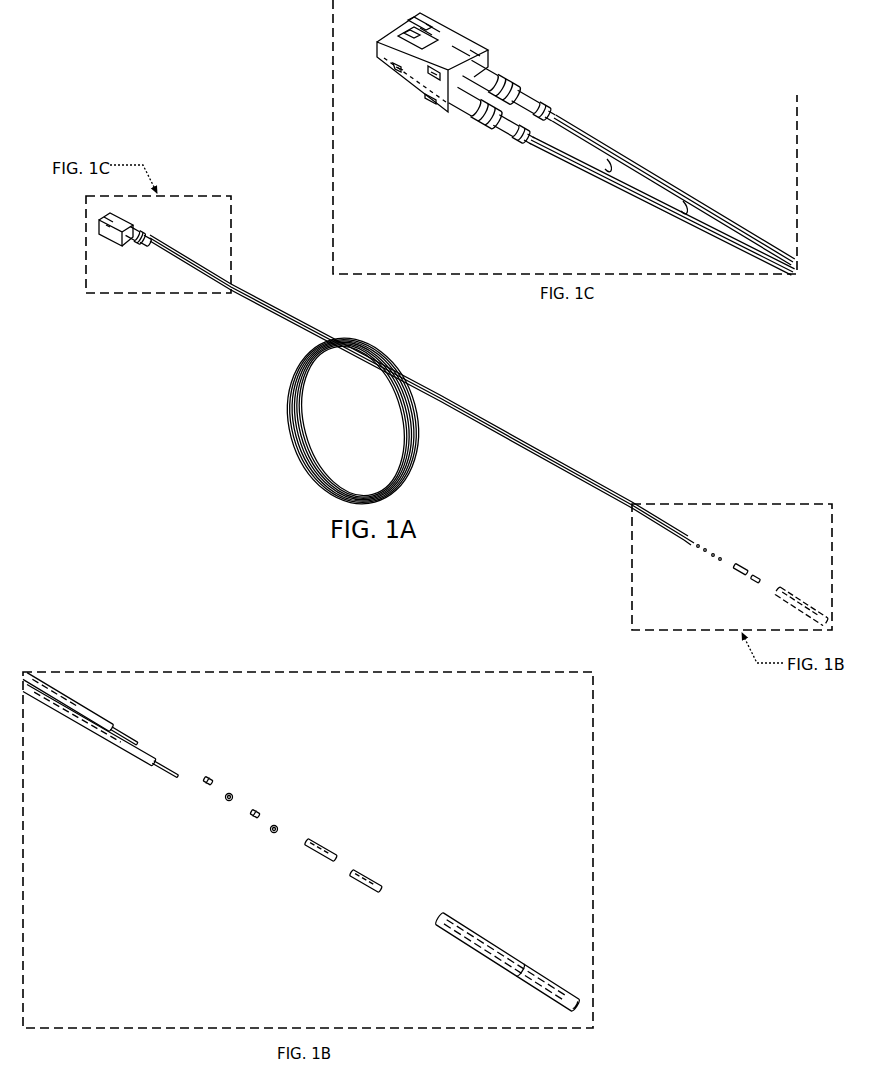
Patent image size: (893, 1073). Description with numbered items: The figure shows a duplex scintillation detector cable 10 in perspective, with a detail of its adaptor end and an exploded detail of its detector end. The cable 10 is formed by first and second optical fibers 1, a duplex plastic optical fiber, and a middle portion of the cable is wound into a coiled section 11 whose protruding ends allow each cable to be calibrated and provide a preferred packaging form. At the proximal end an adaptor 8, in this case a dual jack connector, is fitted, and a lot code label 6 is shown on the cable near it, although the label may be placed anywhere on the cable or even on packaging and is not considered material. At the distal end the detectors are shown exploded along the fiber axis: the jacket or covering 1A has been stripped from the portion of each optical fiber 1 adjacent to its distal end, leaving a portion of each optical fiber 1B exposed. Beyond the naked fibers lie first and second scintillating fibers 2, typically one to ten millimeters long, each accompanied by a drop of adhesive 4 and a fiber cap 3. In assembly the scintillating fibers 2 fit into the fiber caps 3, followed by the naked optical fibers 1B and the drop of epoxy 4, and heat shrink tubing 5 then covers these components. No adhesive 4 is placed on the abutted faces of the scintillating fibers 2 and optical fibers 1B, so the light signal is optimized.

In FIG. 1C, the optical fiber 1 is at (706, 210).
In FIG. 1B, the jacket 1A is at (96, 712).
In FIG. 1B, the exposed optical fiber 1B is at (124, 731).
In FIG. 1B, the scintillating fiber 2 is at (210, 781).
In FIG. 1B, the fiber cap 3 is at (325, 846).
In FIG. 1B, the adhesive 4 is at (232, 794).
In FIG. 1B, the heat shrinkable tubing 5 is at (547, 979).
In FIG. 1A, the lot code label 6 is at (190, 259).
In FIG. 1C, the lot code label 6 is at (649, 178).
In FIG. 1C, the adaptor 8 is at (449, 32).
In FIG. 1A, the duplex scintillation detector cable 10 is at (546, 361).
In FIG. 1A, the coiled section of cable 11 is at (289, 408).